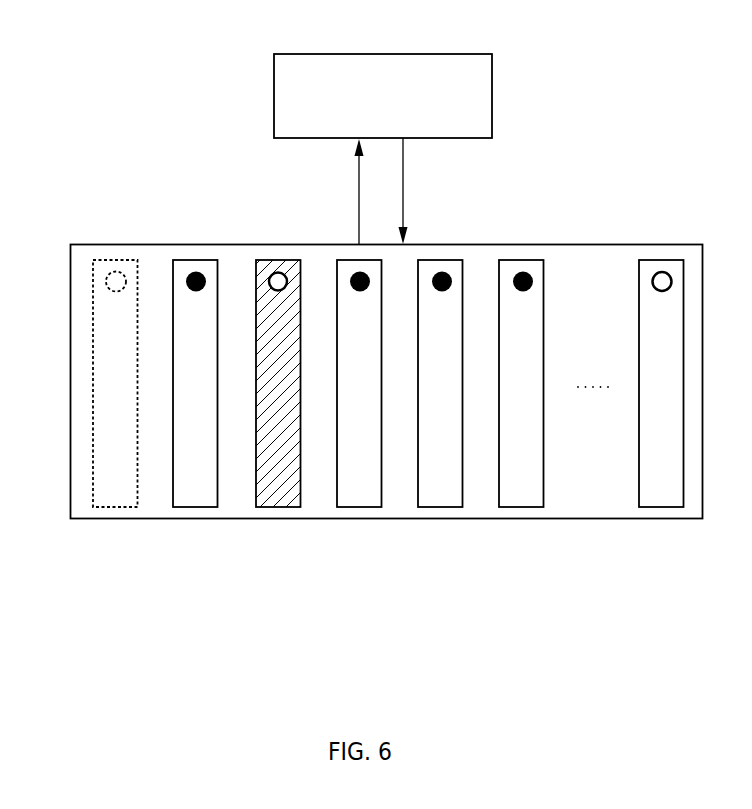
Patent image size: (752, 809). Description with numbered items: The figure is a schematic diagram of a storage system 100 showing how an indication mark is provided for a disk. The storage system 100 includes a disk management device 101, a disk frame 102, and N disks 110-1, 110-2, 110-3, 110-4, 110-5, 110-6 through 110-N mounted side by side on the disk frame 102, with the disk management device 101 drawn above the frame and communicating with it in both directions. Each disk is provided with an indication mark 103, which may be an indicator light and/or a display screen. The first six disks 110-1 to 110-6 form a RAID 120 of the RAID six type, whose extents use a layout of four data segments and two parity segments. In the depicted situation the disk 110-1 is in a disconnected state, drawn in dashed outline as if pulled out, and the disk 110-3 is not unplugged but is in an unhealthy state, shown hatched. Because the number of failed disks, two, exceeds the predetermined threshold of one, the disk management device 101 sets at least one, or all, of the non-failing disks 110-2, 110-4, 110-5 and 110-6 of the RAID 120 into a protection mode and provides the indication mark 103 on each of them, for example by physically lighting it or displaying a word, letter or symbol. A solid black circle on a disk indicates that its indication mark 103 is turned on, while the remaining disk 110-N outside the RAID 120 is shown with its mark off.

The storage system 100 is at (111, 56).
The disk management device 101 is at (490, 55).
The disk frame 102 is at (600, 245).
The indication mark 103 is at (196, 269).
The disk 110-1 is at (115, 507).
The disk 110-2 is at (198, 507).
The disk 110-3 is at (280, 507).
The disk 110-4 is at (359, 507).
The disk 110-5 is at (440, 507).
The disk 110-6 is at (524, 507).
The disk 110-N is at (663, 506).
The RAID 120 is at (90, 603).